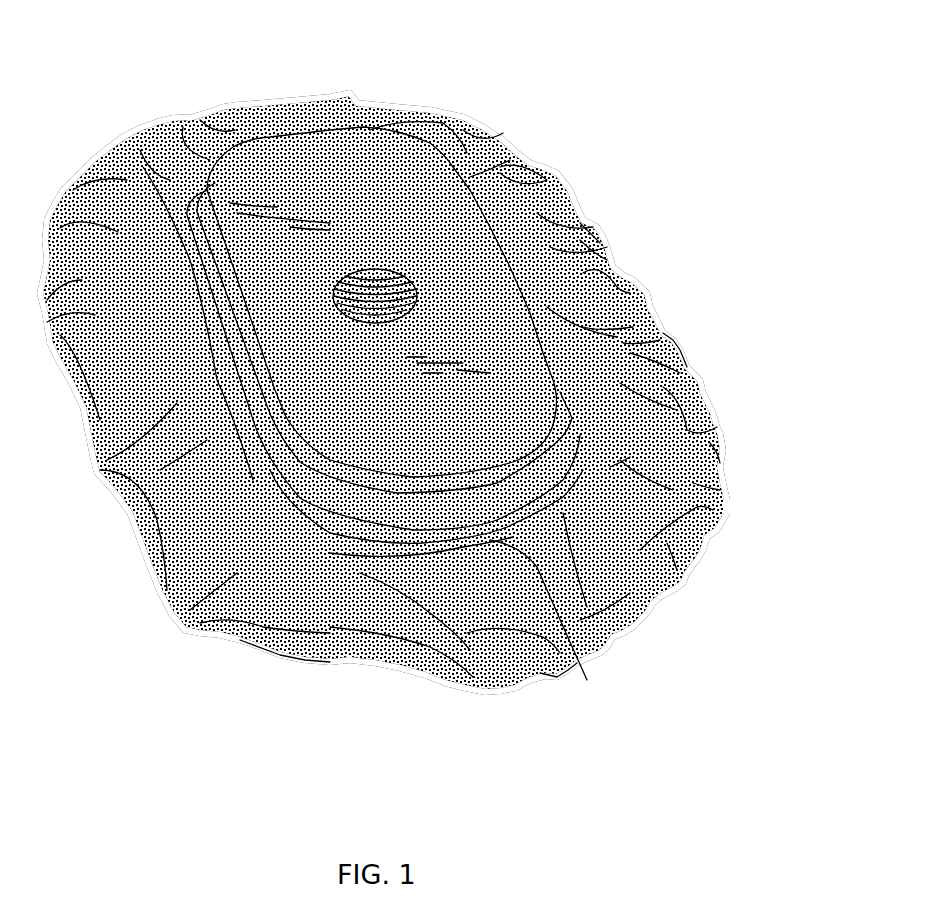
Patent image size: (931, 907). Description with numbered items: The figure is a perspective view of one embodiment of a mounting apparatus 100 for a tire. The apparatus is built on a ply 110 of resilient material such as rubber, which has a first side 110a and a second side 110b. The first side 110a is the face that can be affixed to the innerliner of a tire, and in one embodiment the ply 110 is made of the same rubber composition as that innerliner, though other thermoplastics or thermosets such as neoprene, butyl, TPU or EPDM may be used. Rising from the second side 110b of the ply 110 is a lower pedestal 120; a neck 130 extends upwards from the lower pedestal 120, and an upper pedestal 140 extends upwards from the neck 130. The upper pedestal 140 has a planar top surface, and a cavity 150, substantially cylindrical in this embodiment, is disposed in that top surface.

The mounting apparatus 100 is at (598, 62).
The ply 110 is at (618, 310).
The first side 110a is at (300, 676).
The second side 110b is at (675, 428).
The lower pedestal 120 is at (573, 661).
The neck 130 is at (143, 167).
The upper pedestal 140 is at (267, 160).
The cavity 150 is at (372, 283).